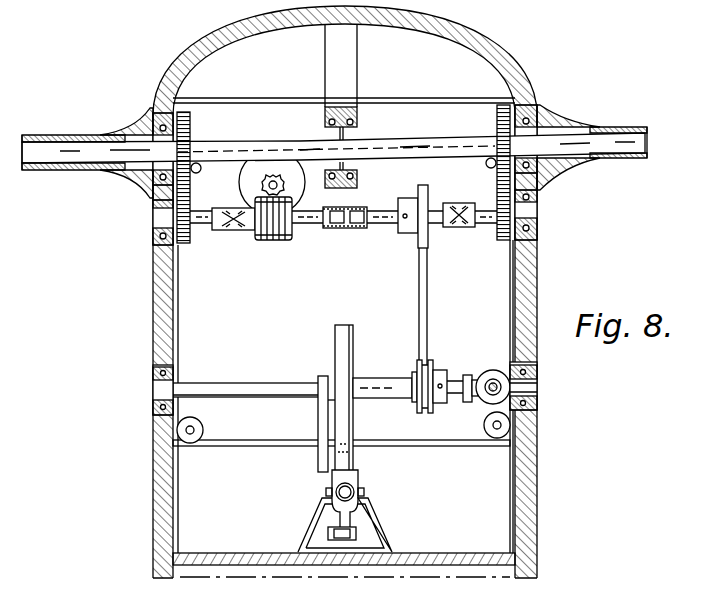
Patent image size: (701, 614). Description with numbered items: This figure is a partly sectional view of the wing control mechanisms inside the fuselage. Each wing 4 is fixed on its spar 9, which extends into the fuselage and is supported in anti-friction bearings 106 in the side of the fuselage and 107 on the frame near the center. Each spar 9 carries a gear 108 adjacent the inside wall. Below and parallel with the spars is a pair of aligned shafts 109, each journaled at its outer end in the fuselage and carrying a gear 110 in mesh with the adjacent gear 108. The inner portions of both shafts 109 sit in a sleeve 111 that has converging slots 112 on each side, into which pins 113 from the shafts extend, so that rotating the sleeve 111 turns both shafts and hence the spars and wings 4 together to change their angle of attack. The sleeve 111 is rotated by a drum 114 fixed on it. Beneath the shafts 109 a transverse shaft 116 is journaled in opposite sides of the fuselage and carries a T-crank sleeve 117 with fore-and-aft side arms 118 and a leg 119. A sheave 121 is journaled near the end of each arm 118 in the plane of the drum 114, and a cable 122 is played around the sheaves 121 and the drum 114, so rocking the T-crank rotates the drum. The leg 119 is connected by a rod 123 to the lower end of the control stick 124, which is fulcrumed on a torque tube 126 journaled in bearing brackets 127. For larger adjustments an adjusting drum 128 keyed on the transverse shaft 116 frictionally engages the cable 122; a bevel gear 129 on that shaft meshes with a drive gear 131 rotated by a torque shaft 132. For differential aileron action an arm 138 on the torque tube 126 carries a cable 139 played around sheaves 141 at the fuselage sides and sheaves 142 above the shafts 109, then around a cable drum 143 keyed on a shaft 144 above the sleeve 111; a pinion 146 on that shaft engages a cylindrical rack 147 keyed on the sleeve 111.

The wing 4 is at (92, 134).
The spar 9 is at (49, 164).
The anti-friction bearing 106 is at (152, 180).
The anti-friction bearing 107 is at (360, 117).
The gear 108 is at (183, 112).
The shaft 109 is at (207, 229).
The gear 110 is at (171, 246).
The sleeve 111 is at (361, 232).
The converging slot 112 is at (230, 233).
The pin 113 is at (229, 209).
The drum 114 is at (412, 236).
The transverse shaft 116 is at (238, 385).
The T-crank sleeve 117 is at (325, 378).
The side arm 118 is at (406, 388).
The leg 119 is at (322, 421).
The sheave 121 is at (432, 400).
The cable 122 is at (428, 322).
The rod 123 is at (339, 541).
The control stick 124 is at (345, 327).
The torque tube 126 is at (362, 497).
The bearing bracket 127 is at (386, 541).
The adjusting drum 128 is at (437, 378).
The bevel gear 129 is at (479, 378).
The drive gear 131 is at (536, 388).
The torque shaft 132 is at (500, 387).
The arm 138 is at (352, 448).
The cable 139 is at (408, 150).
The sheave 141 is at (203, 430).
The sheave 142 is at (197, 170).
The cable drum 143 is at (313, 182).
The shaft 144 is at (276, 178).
The pinion 146 is at (263, 157).
The cylindrical rack 147 is at (271, 242).